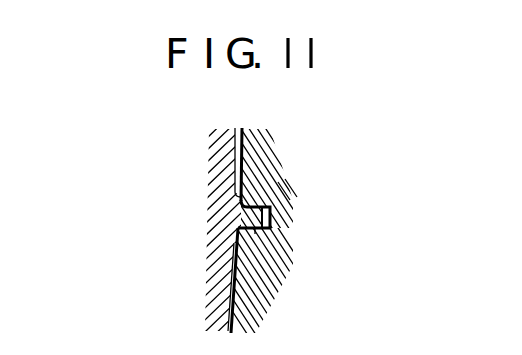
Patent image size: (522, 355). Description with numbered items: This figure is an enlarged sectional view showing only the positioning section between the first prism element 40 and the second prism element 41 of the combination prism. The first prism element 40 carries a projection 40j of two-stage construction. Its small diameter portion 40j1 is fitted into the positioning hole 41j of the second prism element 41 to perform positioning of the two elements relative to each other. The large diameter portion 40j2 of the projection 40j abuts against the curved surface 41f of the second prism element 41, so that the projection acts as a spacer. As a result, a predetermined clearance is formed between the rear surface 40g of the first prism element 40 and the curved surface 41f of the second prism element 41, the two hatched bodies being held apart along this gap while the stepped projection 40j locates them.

The first prism element 40 is at (183, 187).
The second prism element 41 is at (341, 193).
The curved surface 41f is at (244, 143).
The projection 40j is at (240, 220).
The small diameter portion 40j1 is at (255, 233).
The large diameter portion 40j2 is at (235, 194).
The positioning hole 41j is at (270, 218).
The rear surface 40g is at (229, 302).